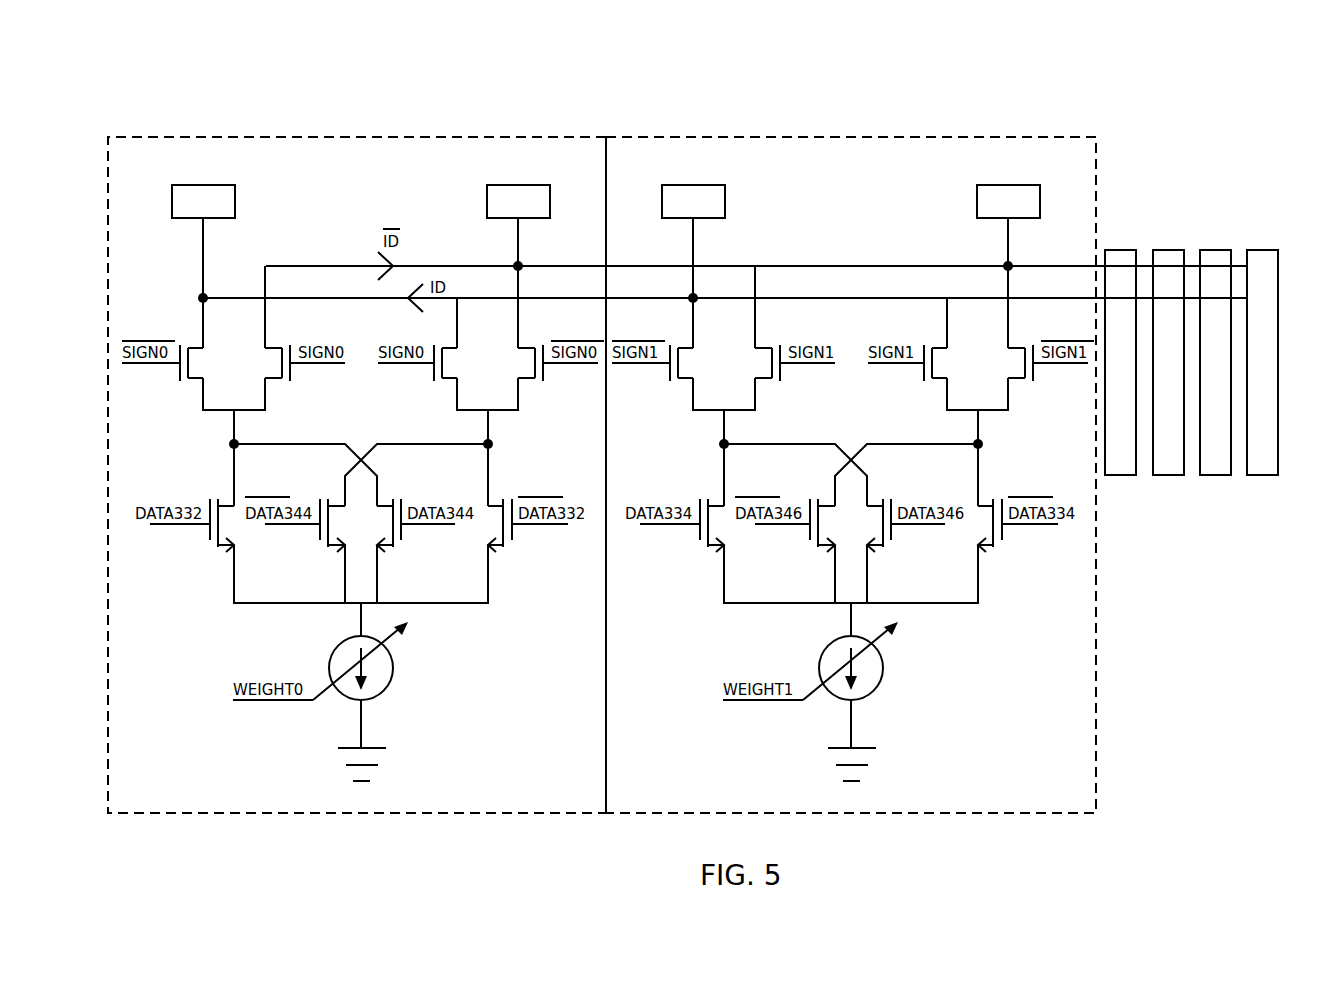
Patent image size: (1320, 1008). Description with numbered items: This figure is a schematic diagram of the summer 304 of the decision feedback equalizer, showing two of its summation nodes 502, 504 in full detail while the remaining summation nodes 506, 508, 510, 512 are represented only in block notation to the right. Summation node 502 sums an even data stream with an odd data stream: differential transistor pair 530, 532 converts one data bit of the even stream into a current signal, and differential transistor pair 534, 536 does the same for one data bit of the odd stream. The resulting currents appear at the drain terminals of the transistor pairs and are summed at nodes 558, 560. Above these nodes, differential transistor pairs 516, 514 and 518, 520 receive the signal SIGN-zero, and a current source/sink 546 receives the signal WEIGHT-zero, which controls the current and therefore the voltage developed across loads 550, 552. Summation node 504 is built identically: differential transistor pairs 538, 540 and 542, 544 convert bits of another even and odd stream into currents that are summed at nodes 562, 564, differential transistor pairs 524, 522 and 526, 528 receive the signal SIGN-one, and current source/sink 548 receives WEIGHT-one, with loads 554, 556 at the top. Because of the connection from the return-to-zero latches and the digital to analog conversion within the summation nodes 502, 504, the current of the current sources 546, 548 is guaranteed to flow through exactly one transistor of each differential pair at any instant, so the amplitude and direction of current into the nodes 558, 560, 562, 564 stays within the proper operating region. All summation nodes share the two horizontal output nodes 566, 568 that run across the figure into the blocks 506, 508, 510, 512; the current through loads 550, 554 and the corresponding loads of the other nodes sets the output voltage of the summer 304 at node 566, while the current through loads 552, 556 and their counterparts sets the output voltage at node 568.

The summer 304 is at (1240, 97).
The summation node 502 is at (424, 137).
The summation node 504 is at (862, 137).
The summation node 506 is at (1118, 250).
The summation node 508 is at (1170, 475).
The summation node 510 is at (1215, 250).
The summation node 512 is at (1265, 475).
The differential transistor pair transistor 514 is at (193, 363).
The differential transistor pair transistor 516 is at (267, 362).
The differential transistor pair transistor 518 is at (450, 363).
The differential transistor pair transistor 520 is at (518, 362).
The differential transistor pair transistor 522 is at (712, 368).
The differential transistor pair transistor 524 is at (738, 358).
The differential transistor pair transistor 526 is at (968, 368).
The differential transistor pair transistor 528 is at (991, 358).
The differential transistor pair transistor 530 is at (235, 524).
The differential transistor pair transistor 532 is at (488, 524).
The differential transistor pair transistor 534 is at (387, 494).
The differential transistor pair transistor 536 is at (339, 494).
The differential transistor pair transistor 538 is at (737, 542).
The differential transistor pair transistor 540 is at (973, 542).
The differential transistor pair transistor 542 is at (904, 506).
The differential transistor pair transistor 544 is at (798, 506).
The current source/sink 546 is at (400, 668).
The current source/sink 548 is at (869, 675).
The load 550 is at (207, 185).
The load 552 is at (522, 185).
The load 554 is at (710, 181).
The load 556 is at (1025, 181).
The node 558 is at (234, 444).
The node 560 is at (488, 444).
The node 562 is at (687, 425).
The node 564 is at (1017, 421).
The node 566 is at (203, 298).
The node 568 is at (520, 266).